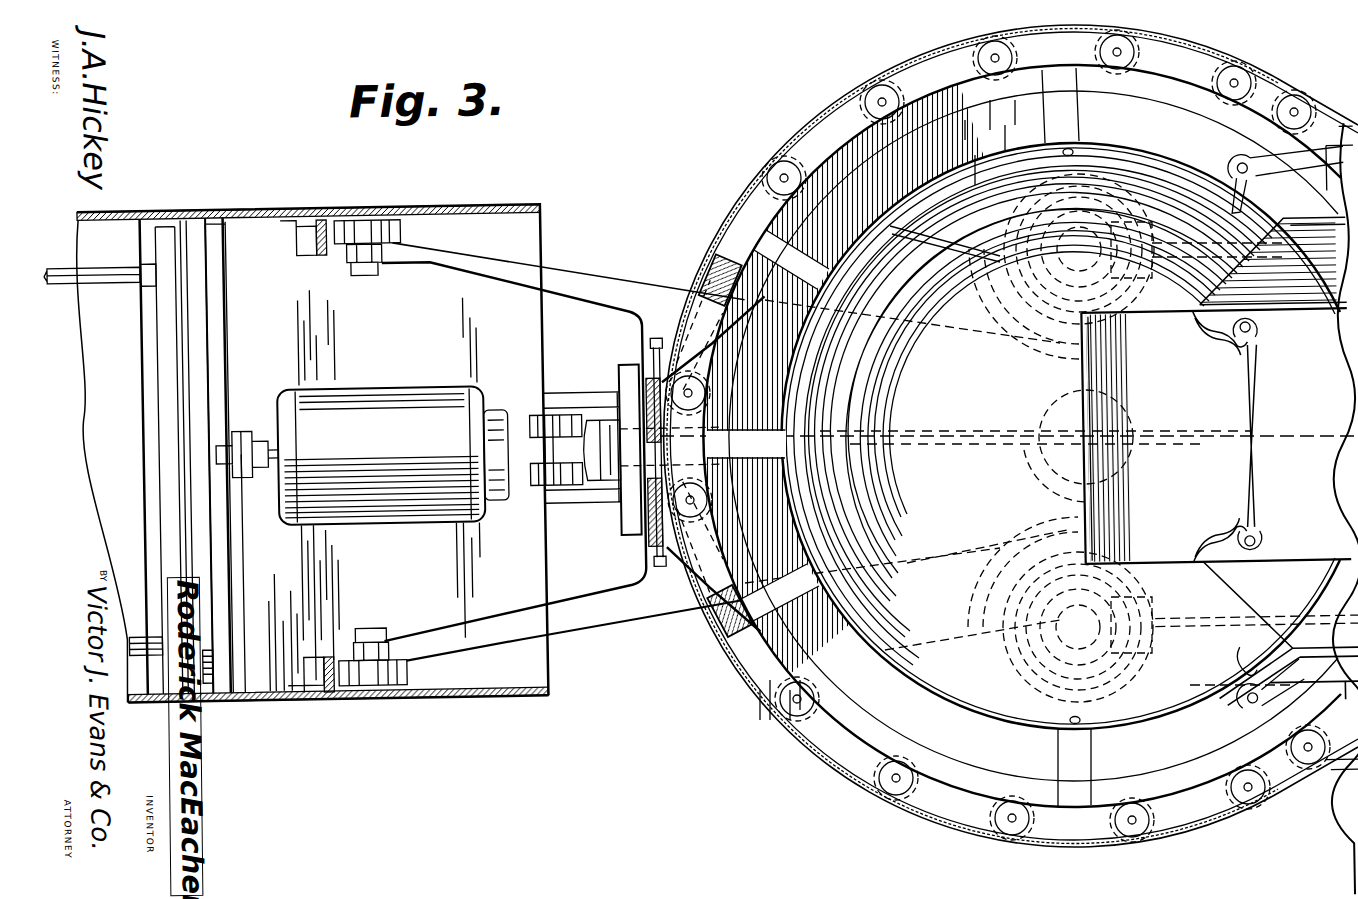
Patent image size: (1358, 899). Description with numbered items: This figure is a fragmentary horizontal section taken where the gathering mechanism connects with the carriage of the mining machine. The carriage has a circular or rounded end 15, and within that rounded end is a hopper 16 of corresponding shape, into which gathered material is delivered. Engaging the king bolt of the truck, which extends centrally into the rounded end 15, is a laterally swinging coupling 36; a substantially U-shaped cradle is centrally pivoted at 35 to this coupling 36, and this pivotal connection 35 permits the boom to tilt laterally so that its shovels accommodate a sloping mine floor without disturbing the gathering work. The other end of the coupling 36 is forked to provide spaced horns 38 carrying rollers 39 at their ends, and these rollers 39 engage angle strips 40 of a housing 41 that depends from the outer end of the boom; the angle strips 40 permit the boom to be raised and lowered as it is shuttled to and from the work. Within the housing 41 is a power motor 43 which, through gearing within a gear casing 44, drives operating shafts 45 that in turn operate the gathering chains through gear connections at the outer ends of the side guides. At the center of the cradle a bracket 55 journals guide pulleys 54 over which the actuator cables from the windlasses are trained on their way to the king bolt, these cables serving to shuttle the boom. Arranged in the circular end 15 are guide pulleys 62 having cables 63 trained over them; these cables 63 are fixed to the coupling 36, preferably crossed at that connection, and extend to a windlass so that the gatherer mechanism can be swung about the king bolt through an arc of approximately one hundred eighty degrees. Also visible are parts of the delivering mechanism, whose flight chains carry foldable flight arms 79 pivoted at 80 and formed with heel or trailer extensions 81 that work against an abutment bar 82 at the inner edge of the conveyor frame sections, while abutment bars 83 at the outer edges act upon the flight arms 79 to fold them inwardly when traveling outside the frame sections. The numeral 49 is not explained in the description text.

The rounded end 15 is at (1057, 50).
The hopper 16 is at (981, 162).
The pivot 35 is at (597, 404).
The laterally swinging coupling 36 is at (668, 283).
The spaced horns 38 is at (530, 268).
The rollers 39 is at (405, 219).
The angle strips 40 is at (310, 235).
The housing 41 is at (398, 690).
The power motor 43 is at (362, 386).
The gear casing 44 is at (215, 341).
The operating shafts 45 is at (103, 261).
The clamp link 49 is at (739, 240).
The guide pulleys 54 is at (561, 408).
The bracket 55 is at (609, 492).
The guide pulleys 62 is at (990, 42).
The cables 63 is at (826, 126).
The foldable flight arms 79 is at (1253, 449).
The pivot 80 is at (1254, 331).
The heel or trailer extensions 81 is at (1211, 555).
The abutment bar 82 is at (1218, 511).
The abutment bars 83 is at (1341, 782).